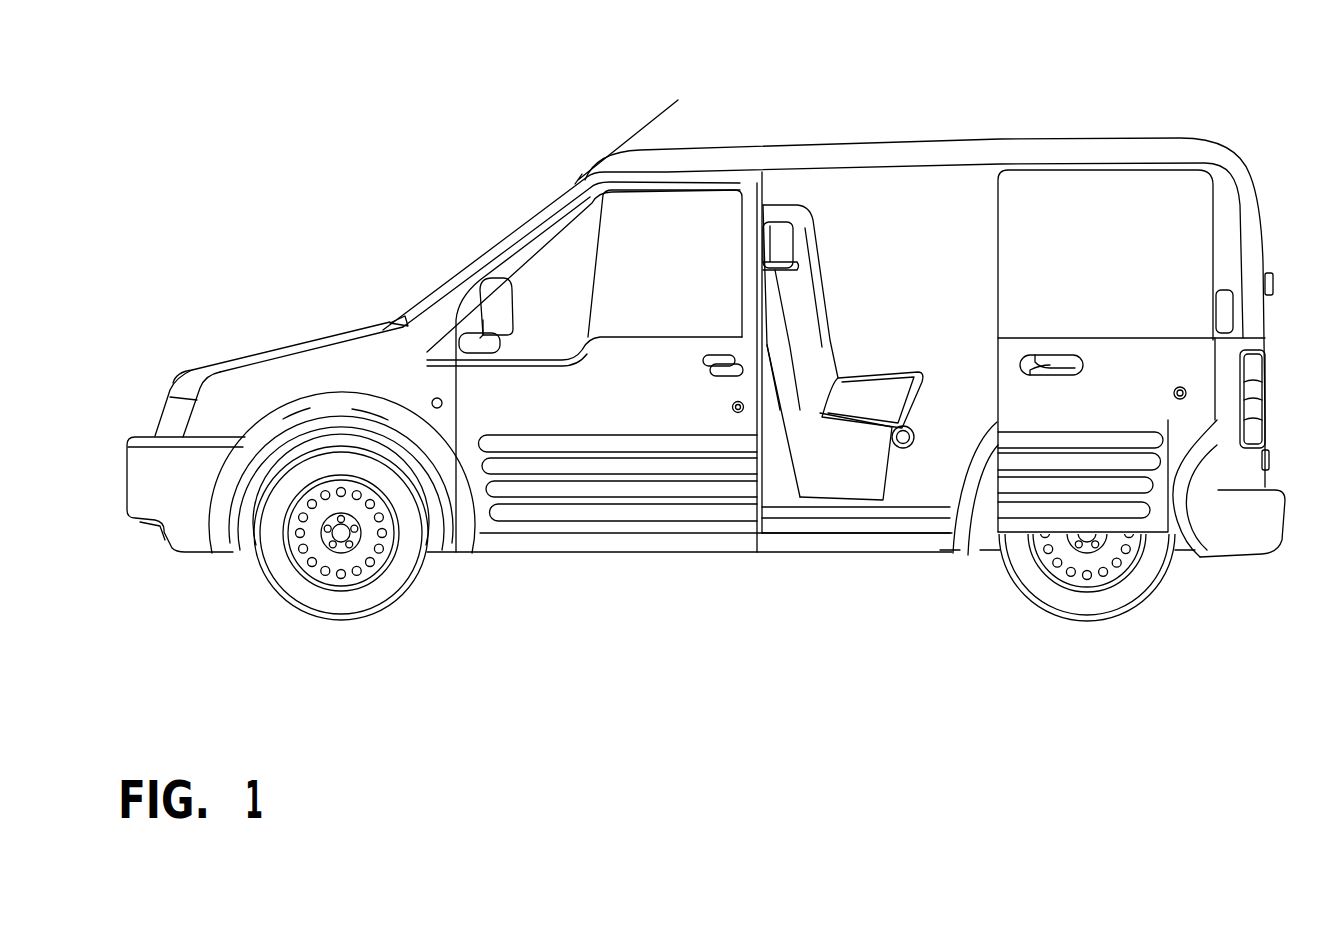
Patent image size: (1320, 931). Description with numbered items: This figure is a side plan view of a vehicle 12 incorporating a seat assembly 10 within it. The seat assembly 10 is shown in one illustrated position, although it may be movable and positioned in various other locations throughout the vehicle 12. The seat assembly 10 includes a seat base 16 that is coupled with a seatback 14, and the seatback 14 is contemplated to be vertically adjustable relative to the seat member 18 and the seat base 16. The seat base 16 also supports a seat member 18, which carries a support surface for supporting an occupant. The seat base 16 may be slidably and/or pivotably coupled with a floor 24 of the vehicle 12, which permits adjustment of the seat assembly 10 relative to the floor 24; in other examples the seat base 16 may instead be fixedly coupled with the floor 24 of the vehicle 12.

The seat assembly 10 is at (826, 352).
The vehicle 12 is at (1035, 142).
The seatback 14 is at (762, 270).
The seat base 16 is at (848, 482).
The seat member 18 is at (898, 463).
The floor 24 is at (781, 508).